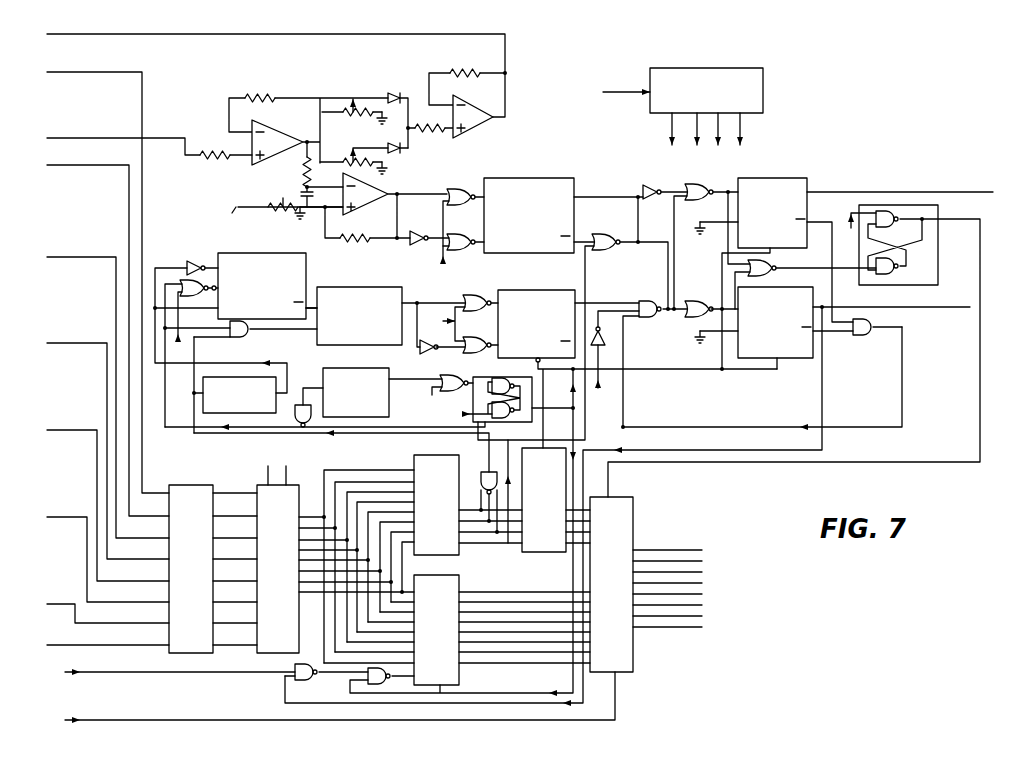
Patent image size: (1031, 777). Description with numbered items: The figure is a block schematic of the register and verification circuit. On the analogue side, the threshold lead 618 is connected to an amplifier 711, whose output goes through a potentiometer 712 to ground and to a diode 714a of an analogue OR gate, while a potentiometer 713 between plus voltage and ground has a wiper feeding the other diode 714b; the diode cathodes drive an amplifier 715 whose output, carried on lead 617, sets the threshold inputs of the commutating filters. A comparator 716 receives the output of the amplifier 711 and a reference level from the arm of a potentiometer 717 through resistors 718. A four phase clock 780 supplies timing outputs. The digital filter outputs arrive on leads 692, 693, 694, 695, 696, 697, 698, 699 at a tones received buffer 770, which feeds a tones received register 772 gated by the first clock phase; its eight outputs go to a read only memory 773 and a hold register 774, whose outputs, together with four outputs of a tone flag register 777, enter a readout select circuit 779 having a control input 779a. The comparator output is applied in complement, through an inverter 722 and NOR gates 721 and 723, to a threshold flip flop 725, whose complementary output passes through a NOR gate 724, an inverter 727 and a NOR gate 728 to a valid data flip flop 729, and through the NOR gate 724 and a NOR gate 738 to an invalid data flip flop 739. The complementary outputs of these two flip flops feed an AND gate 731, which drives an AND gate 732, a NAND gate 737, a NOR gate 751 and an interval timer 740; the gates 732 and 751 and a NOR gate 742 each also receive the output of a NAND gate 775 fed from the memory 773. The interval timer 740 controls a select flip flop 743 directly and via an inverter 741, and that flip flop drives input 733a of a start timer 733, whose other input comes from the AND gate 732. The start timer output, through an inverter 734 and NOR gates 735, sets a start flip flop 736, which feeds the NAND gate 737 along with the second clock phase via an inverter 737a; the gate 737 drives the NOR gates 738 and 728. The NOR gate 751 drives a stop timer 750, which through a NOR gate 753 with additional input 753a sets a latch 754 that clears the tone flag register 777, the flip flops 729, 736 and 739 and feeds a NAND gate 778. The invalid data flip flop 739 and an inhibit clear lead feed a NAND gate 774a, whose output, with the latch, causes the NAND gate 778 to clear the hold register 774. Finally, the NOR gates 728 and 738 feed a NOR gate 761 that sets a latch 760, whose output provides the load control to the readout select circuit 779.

The input line 617 is at (120, 34).
The threshold lead 618 is at (106, 137).
The lead 692 is at (83, 644).
The lead 693 is at (83, 604).
The lead 694 is at (85, 517).
The lead 695 is at (89, 430).
The lead 696 is at (87, 342).
The lead 697 is at (99, 256).
The lead 698 is at (103, 164).
The lead 699 is at (111, 72).
The amplifier 711 is at (288, 133).
The potentiometer 712 is at (352, 156).
The potentiometer 713 is at (350, 103).
The diode 714a is at (404, 149).
The diode 714b is at (396, 92).
The amplifier 715 is at (476, 125).
The comparator 716 is at (377, 208).
The potentiometer 717 is at (240, 208).
The resistors 718 is at (300, 184).
The NOR gate 721 is at (467, 188).
The inverter 722 is at (418, 231).
The NOR gate 723 is at (476, 232).
The NOR gate 724 is at (618, 234).
The threshold flip flop 725 is at (524, 178).
The inverter 727 is at (644, 188).
The NOR gate 728 is at (707, 183).
The valid data flip flop 729 is at (774, 177).
The AND gate 731 is at (870, 337).
The AND gate 732 is at (250, 338).
The start timer 733 is at (397, 284).
The input 733a is at (314, 304).
The inverter 734 is at (417, 349).
The NOR gates 735 is at (463, 324).
The start flip flop 736 is at (538, 288).
The NAND gate 737 is at (655, 302).
The inverter 737a is at (613, 345).
The NOR gate 738 is at (710, 296).
The invalid data flip flop 739 is at (768, 358).
The interval timer 740 is at (234, 374).
The inverter 741 is at (192, 265).
The NOR gate 742 is at (180, 278).
The select flip flop 743 is at (258, 255).
The stop timer 750 is at (363, 364).
The NOR gate 751 is at (299, 402).
The NOR gate 753 is at (440, 378).
The additional input 753a is at (432, 395).
The latch circuit 754 is at (510, 375).
The latch circuit 760 is at (931, 264).
The NOR gate 761 is at (773, 270).
The tones received buffer 770 is at (197, 485).
The tones received register 772 is at (244, 484).
The read only memory 773 is at (414, 457).
The hold register 774 is at (450, 572).
The NAND gate 774a is at (308, 680).
The NAND gate 775 is at (482, 467).
The tone flag register 777 is at (551, 560).
The NAND gate 778 is at (456, 685).
The readout select circuit 779 is at (633, 536).
The control input 779a is at (616, 676).
The four phase clock 780 is at (763, 98).